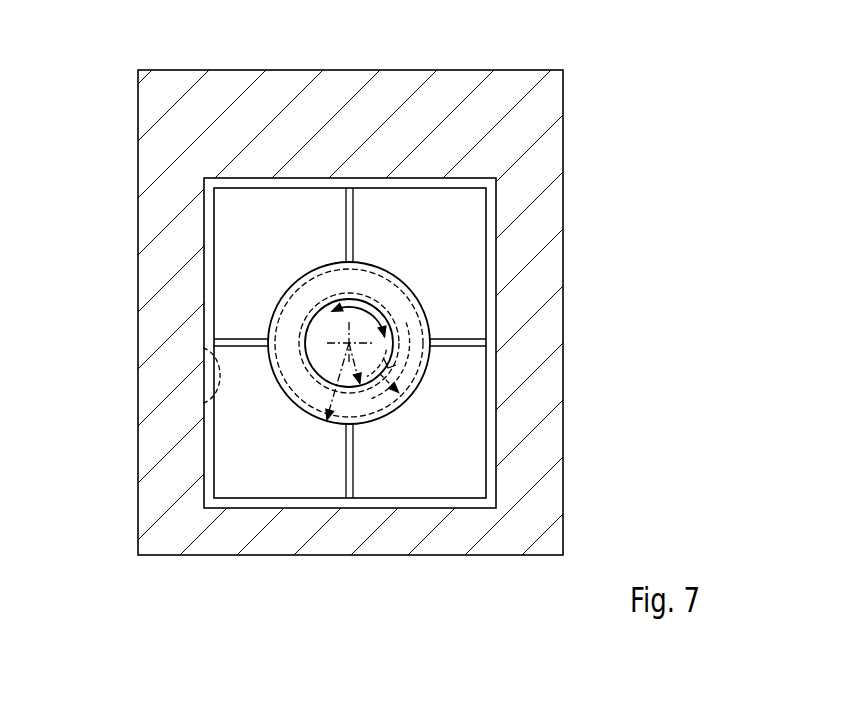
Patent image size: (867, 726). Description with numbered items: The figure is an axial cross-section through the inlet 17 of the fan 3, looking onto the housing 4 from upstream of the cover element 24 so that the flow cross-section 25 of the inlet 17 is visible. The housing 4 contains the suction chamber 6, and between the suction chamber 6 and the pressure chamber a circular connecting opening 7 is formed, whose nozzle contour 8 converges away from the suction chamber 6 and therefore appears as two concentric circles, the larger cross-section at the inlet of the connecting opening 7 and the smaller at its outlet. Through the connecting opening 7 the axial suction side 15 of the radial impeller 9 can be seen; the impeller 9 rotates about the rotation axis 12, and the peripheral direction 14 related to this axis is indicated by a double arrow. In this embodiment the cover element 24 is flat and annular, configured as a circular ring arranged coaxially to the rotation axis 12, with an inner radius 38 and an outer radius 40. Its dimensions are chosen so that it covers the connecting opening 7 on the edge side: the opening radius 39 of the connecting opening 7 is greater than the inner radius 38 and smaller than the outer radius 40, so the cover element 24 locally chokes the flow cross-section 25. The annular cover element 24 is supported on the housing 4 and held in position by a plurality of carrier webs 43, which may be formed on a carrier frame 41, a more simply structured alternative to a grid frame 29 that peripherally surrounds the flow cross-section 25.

The fan 3 is at (634, 158).
The housing 4 is at (572, 235).
The suction chamber 6 is at (251, 261).
The connecting opening 7 is at (283, 380).
The nozzle contour 8 is at (349, 343).
The impeller 9 is at (334, 371).
The rotation axis 12 is at (349, 343).
The peripheral direction 14 is at (372, 305).
The suction side 15 is at (392, 366).
The inlet 17 is at (462, 464).
The cover element 24 is at (436, 312).
The flow cross-section 25 is at (200, 402).
The grid frame 29 is at (208, 282).
The inner radius 38 is at (368, 396).
The opening radius 39 is at (405, 400).
The outer radius 40 is at (318, 424).
The carrier frame 41 is at (194, 323).
The carrier webs 43 is at (355, 215).